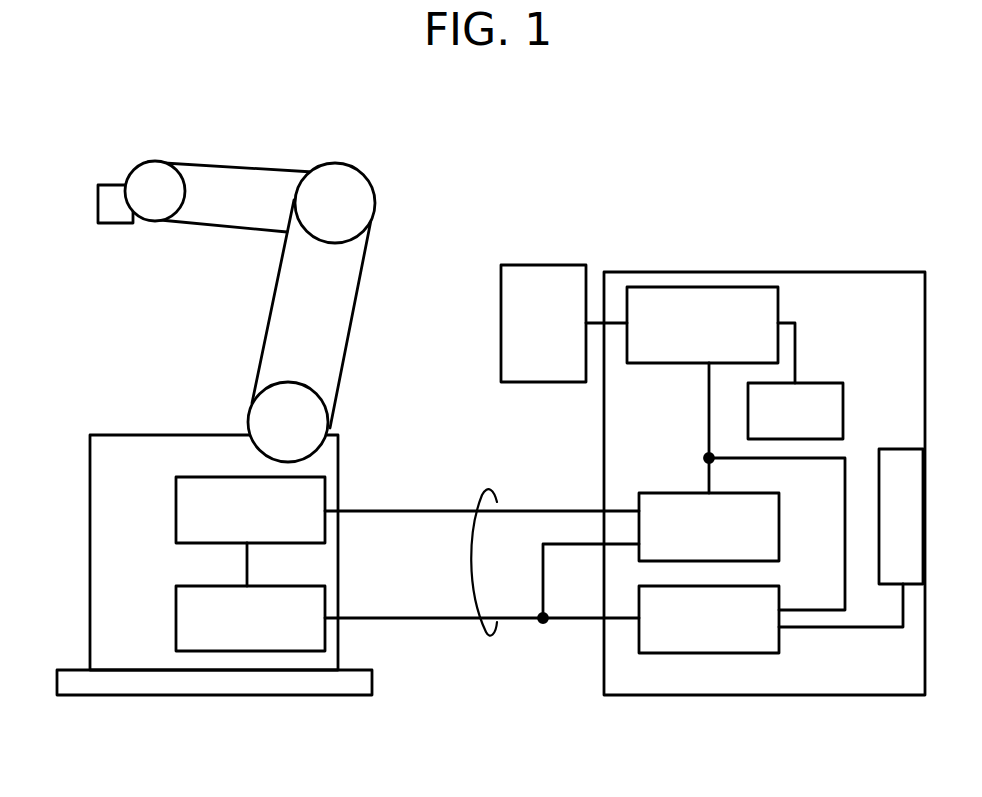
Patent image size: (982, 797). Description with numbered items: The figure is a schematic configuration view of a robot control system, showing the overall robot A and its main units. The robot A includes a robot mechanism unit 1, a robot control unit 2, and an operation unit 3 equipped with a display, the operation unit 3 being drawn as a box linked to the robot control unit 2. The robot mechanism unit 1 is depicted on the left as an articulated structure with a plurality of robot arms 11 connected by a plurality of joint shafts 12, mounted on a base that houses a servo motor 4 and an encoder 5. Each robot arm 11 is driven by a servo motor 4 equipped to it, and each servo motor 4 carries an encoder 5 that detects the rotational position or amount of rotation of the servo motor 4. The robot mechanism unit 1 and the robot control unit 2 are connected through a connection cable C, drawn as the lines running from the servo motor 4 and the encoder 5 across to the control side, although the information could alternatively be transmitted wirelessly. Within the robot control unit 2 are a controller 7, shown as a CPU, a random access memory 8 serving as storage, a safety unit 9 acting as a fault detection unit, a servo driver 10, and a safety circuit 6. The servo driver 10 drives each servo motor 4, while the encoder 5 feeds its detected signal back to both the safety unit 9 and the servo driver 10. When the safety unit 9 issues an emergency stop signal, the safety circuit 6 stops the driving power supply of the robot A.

The robot mechanism unit 1 is at (252, 385).
The robot control unit 2 is at (764, 446).
The operation unit 3 is at (530, 265).
The servo motor 4 is at (176, 513).
The encoder 5 is at (176, 623).
The safety circuit 6 is at (890, 443).
The controller 7 is at (778, 310).
The random access memory 8 is at (843, 395).
The safety unit 9 is at (779, 637).
The servo driver 10 is at (779, 533).
The robot arm 11 is at (243, 180).
The joint shaft 12 is at (145, 173).
The robot A is at (641, 133).
The connection cable C is at (490, 637).